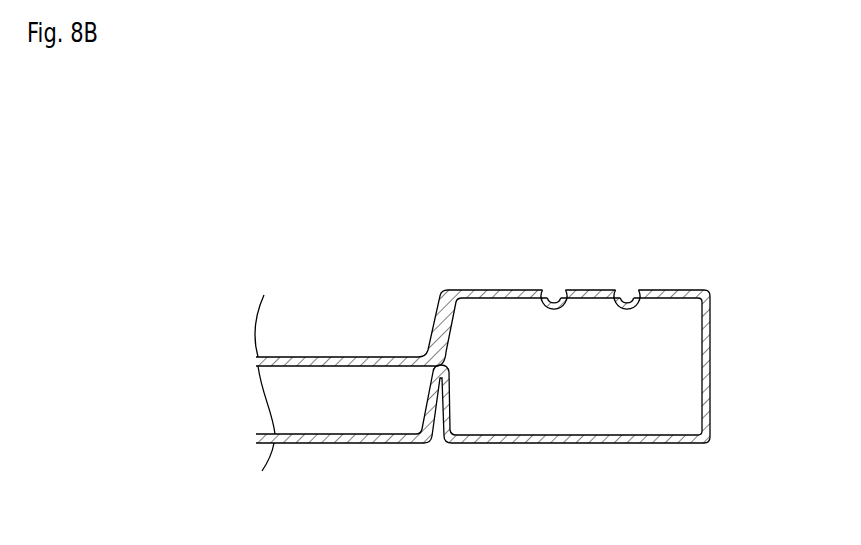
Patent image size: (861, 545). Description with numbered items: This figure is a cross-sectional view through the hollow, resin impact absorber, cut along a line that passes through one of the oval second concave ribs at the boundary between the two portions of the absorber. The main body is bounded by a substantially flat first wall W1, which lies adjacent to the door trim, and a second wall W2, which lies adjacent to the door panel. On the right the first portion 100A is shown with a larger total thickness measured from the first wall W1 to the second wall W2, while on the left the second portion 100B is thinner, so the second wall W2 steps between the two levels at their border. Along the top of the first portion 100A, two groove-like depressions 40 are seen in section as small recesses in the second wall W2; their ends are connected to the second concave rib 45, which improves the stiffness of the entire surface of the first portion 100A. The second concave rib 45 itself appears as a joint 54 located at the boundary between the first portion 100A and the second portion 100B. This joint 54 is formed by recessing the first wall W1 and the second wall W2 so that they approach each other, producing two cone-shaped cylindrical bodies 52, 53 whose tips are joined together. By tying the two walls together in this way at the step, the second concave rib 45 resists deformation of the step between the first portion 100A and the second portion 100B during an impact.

The first portion 100A is at (747, 225).
The second portion 100B is at (437, 225).
The groove-like depression 40 is at (630, 292).
The second concave rib 45 is at (432, 342).
The cone-shaped cylindrical body 52 is at (455, 412).
The cone-shaped cylindrical body 53 is at (447, 317).
The joint 54 is at (436, 380).
The first wall W1 is at (610, 443).
The second wall W2 is at (470, 291).